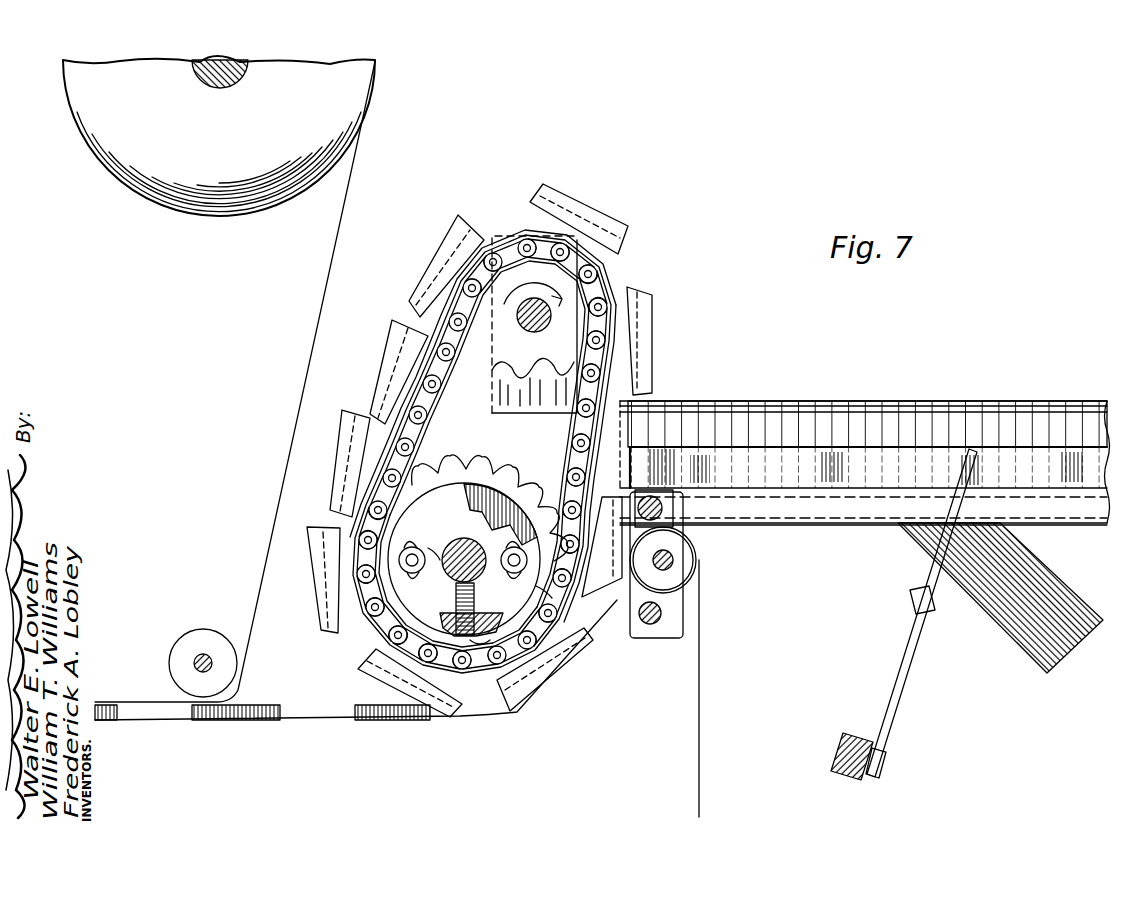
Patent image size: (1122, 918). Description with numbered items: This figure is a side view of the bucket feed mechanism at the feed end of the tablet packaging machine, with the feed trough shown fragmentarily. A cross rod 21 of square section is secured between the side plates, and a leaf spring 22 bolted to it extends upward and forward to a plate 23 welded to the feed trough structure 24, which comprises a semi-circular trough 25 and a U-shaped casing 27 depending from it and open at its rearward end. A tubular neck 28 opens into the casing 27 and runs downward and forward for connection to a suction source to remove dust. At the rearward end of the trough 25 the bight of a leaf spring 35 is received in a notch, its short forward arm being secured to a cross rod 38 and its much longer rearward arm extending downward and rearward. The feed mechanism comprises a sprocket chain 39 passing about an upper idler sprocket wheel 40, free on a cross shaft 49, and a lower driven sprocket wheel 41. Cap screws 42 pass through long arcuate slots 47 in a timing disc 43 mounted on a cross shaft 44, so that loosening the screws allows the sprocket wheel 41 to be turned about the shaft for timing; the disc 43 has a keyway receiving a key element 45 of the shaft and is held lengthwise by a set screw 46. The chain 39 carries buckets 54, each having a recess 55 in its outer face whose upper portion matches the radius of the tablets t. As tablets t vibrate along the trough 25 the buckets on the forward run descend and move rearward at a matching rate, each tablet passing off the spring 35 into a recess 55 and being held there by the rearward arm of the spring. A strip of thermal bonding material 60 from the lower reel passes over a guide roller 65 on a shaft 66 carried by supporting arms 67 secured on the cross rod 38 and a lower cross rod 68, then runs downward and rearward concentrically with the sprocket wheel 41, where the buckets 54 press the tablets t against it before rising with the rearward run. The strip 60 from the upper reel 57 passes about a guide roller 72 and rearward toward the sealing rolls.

The cross rod 21 is at (834, 752).
The leaf spring 22 is at (900, 686).
The plate 23 is at (910, 598).
The feed trough structure 24 is at (805, 530).
The trough 25 is at (857, 496).
The casing 27 is at (818, 524).
The tubular neck 28 is at (990, 604).
The leaf spring 35 is at (648, 528).
The cross rod 38 is at (680, 530).
The sprocket chain 39 is at (422, 428).
The upper idler sprocket wheel 40 is at (492, 348).
The lower driven sprocket wheel 41 is at (502, 470).
The cap screws 42 is at (413, 546).
The timing disc 43 is at (410, 608).
The cross shaft 44 is at (460, 540).
The key element 45 is at (456, 590).
The set screw 46 is at (488, 632).
The arcuate slots 47 is at (568, 612).
The cross shaft 49 is at (517, 314).
The buckets 54 is at (495, 450).
The pocket or recess 55 is at (648, 326).
The upper reel 57 is at (200, 60).
The roll of thermal bonding material 60 is at (158, 190).
The guide roller 65 is at (696, 568).
The shaft 66 is at (670, 566).
The supporting arms 67 is at (647, 638).
The cross rod 68 is at (660, 617).
The guide roller 72 is at (201, 640).
The tablets t is at (253, 705).